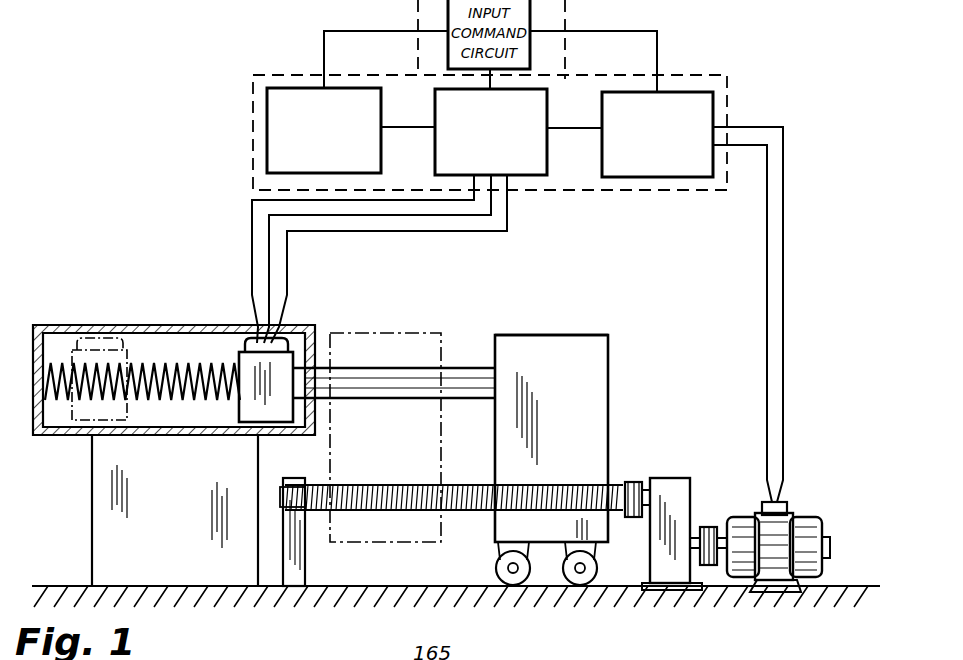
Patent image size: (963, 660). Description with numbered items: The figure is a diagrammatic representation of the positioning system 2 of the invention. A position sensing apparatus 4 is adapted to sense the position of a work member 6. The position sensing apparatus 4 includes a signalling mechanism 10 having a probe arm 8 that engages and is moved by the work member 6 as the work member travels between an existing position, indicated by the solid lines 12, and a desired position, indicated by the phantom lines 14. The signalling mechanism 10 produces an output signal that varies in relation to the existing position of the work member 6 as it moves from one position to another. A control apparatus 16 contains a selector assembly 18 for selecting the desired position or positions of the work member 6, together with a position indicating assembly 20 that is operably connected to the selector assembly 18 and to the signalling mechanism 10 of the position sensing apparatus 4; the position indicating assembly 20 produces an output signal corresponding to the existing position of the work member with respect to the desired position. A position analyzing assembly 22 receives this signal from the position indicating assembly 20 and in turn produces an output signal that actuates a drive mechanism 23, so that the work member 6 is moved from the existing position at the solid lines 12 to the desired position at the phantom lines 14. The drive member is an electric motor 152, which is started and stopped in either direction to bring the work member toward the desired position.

The positioning system 2 is at (158, 124).
The position sensing apparatus 4 is at (137, 318).
The work member 6 is at (572, 350).
The probe arm 8 is at (370, 400).
The signalling mechanism 10 is at (230, 332).
The solid lines 12 is at (563, 310).
The phantom lines 14 is at (383, 333).
The control apparatus 16 is at (262, 77).
The selector assembly 18 is at (268, 127).
The position indicating assembly 20 is at (532, 176).
The position analyzing assembly 22 is at (684, 92).
The drive mechanism 23 is at (664, 466).
The electric motor 152 is at (804, 520).